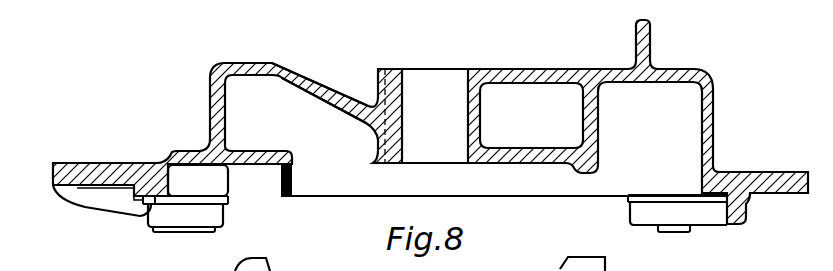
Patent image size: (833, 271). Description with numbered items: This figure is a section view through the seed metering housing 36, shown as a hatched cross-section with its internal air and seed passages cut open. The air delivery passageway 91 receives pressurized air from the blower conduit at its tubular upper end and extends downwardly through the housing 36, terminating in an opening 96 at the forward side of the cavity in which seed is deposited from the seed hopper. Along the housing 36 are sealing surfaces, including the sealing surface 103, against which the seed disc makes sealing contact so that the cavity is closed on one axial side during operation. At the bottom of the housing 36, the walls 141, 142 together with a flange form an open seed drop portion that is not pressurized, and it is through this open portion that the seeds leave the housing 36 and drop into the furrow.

The housing 36 is at (712, 141).
The air delivery passageway 91 is at (279, 94).
The opening 96 is at (337, 152).
The sealing surface 103 is at (142, 216).
The wall 141 is at (226, 184).
The wall 142 is at (253, 166).